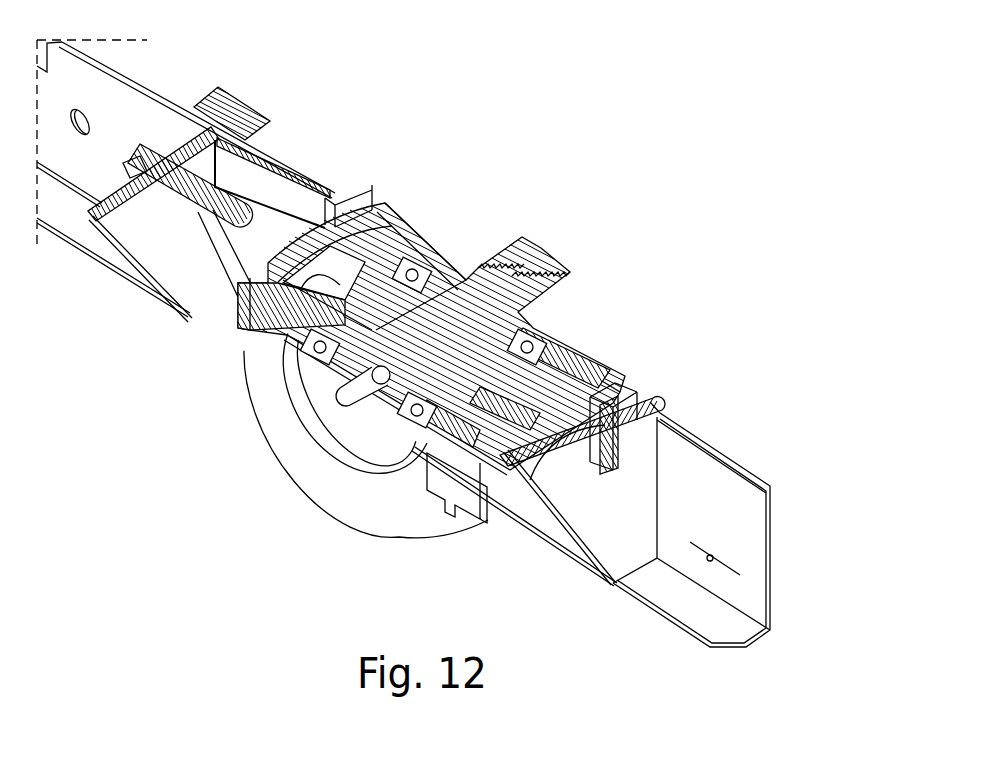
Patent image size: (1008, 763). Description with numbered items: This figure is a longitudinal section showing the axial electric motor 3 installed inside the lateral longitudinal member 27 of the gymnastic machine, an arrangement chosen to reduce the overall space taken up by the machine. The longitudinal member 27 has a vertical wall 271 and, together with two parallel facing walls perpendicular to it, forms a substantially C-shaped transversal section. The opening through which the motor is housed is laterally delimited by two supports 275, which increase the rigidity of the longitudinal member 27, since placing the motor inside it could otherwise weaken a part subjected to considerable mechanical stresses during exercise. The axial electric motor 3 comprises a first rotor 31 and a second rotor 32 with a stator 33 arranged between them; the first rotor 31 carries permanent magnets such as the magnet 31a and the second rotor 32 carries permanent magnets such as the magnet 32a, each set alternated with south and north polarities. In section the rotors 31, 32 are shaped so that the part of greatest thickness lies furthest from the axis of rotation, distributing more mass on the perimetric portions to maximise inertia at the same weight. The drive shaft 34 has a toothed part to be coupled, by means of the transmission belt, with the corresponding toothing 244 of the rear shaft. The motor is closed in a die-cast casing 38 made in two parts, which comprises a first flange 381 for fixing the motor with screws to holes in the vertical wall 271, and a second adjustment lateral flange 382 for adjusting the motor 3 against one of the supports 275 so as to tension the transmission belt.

The axial electric motor 3 is at (305, 515).
The longitudinal member 27 is at (750, 524).
The vertical wall 271 is at (753, 573).
The supports 275 is at (148, 248).
The first rotor 31 is at (233, 308).
The permanent magnet 31a is at (353, 247).
The second rotor 32 is at (300, 306).
The permanent magnet 32a is at (290, 285).
The stator 33 is at (284, 328).
The drive shaft 34 is at (417, 368).
The die-cast casing 38 is at (433, 535).
The first flange 381 is at (545, 470).
The second adjustment lateral flange 382 is at (233, 250).
The toothing 244 is at (552, 290).